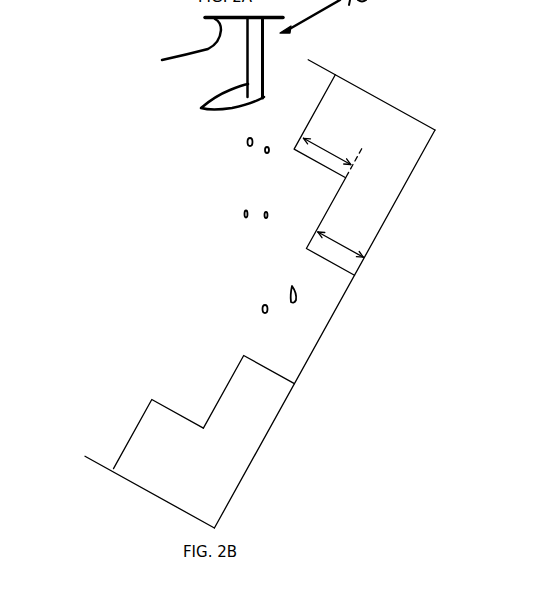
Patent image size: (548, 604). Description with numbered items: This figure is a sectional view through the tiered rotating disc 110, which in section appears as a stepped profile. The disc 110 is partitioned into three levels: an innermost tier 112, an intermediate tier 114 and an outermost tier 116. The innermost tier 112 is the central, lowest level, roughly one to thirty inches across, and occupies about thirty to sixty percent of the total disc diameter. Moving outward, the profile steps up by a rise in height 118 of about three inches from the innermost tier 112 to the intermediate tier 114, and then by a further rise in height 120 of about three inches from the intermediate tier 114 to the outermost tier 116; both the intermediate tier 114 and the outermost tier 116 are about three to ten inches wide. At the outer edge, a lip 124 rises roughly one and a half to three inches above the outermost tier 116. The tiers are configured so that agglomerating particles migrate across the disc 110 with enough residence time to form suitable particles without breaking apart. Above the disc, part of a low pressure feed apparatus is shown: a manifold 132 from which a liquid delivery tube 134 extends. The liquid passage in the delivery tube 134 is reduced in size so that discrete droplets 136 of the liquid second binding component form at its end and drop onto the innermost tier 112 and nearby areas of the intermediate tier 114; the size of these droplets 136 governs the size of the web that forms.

In FIG. 2B, the rotating disc 110 is at (260, 284).
In FIG. 2B, the innermost tier 112 is at (312, 358).
In FIG. 2B, the intermediate tier 114 is at (227, 393).
In FIG. 2B, the outermost tier 116 is at (133, 437).
In FIG. 2B, the rise in height 118 is at (342, 246).
In FIG. 2B, the rise in height 120 is at (326, 151).
In FIG. 2B, the lip 124 is at (362, 90).
In FIG. 2A, the manifold 132 is at (160, 47).
In FIG. 2A, the liquid delivery tube 134 is at (212, 78).
In FIG. 2A, the droplets 136 is at (263, 155).